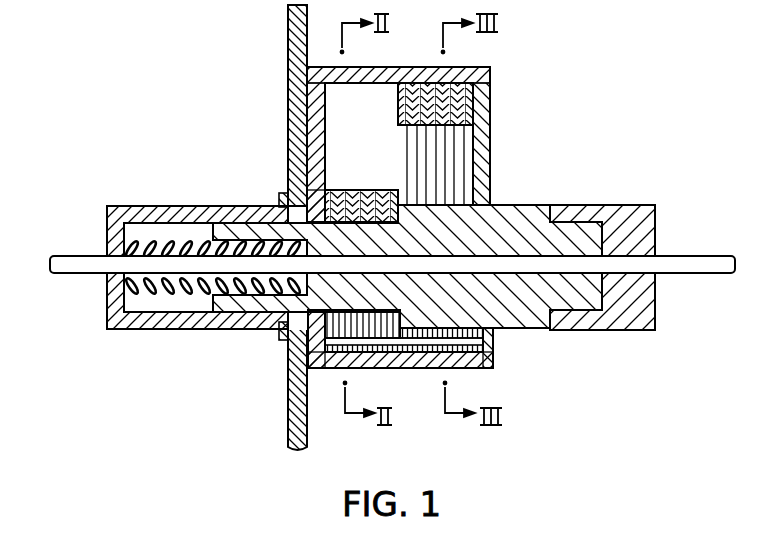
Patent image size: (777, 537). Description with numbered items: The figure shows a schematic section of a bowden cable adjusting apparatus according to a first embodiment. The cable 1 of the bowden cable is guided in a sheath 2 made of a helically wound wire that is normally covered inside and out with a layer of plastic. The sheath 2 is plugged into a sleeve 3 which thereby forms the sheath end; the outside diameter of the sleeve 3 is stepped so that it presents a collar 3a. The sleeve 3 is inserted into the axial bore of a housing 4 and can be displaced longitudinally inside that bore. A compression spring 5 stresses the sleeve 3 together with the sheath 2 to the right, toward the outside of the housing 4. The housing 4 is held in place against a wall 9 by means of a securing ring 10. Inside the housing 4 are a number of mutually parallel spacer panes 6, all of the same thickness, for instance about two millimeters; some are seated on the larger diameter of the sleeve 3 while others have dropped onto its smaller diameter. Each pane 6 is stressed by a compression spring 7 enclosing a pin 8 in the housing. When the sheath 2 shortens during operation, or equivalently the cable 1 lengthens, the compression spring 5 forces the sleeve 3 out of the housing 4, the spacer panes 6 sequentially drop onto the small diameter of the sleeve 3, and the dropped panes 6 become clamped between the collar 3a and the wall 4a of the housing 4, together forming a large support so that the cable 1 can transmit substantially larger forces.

The cable 1 is at (701, 256).
The sheath 2 is at (612, 212).
The sleeve 3 is at (532, 227).
The collar 3a is at (400, 213).
The housing 4 is at (486, 161).
The wall of the housing 4a is at (320, 187).
The compression spring 5 is at (195, 292).
The spacer panes 6 is at (398, 101).
The compression spring 7 is at (386, 335).
The pin 8 is at (493, 339).
The wall 9 is at (292, 371).
The securing ring 10 is at (281, 197).